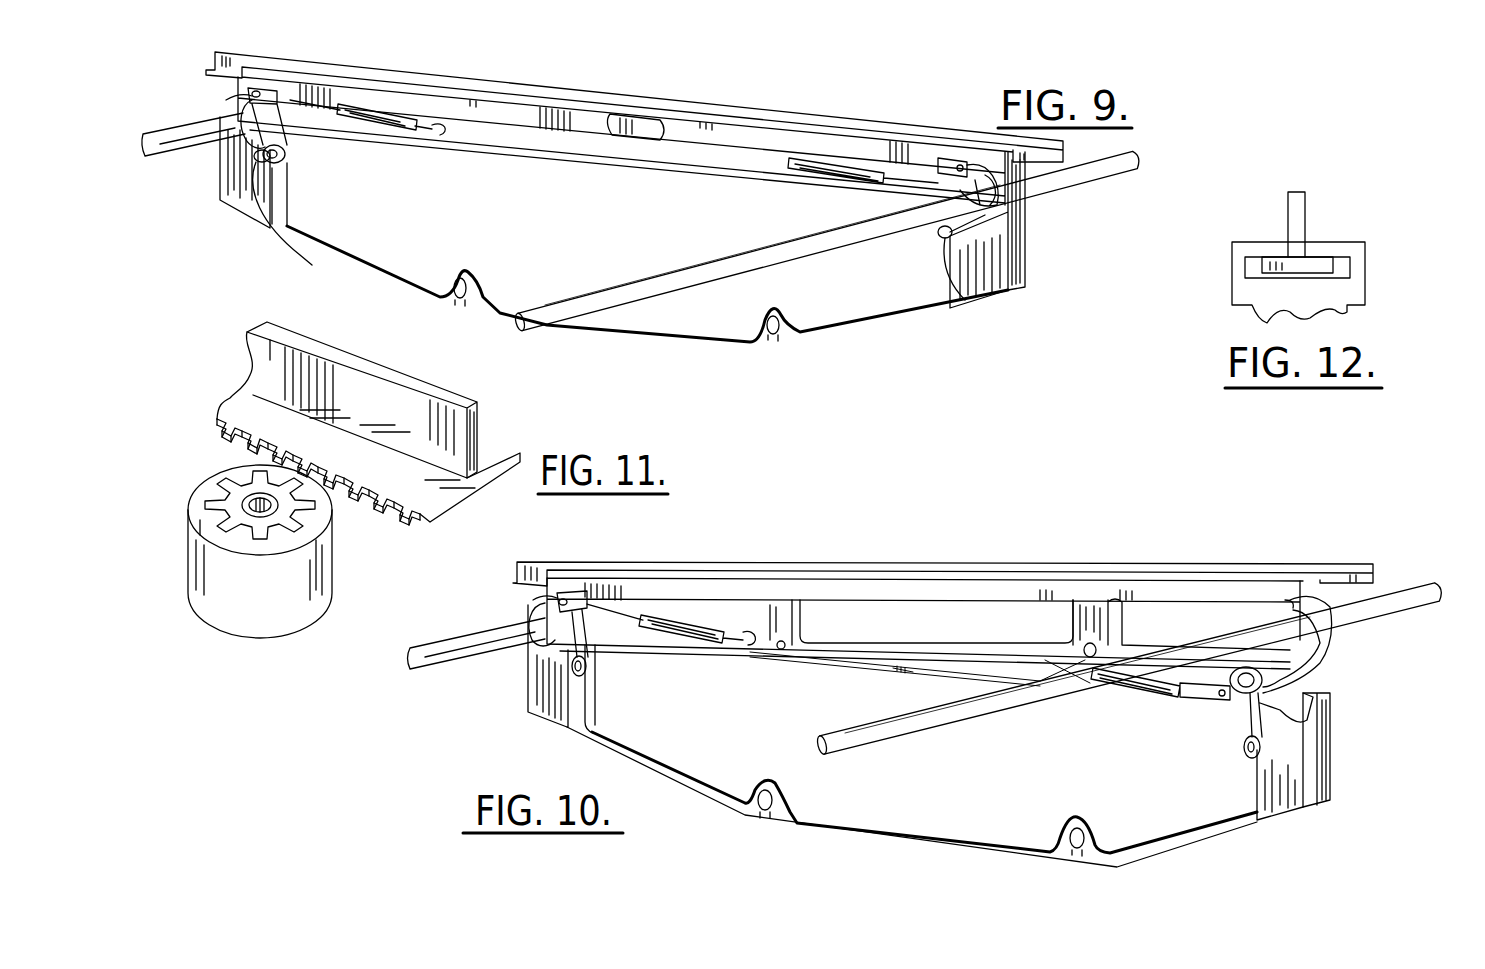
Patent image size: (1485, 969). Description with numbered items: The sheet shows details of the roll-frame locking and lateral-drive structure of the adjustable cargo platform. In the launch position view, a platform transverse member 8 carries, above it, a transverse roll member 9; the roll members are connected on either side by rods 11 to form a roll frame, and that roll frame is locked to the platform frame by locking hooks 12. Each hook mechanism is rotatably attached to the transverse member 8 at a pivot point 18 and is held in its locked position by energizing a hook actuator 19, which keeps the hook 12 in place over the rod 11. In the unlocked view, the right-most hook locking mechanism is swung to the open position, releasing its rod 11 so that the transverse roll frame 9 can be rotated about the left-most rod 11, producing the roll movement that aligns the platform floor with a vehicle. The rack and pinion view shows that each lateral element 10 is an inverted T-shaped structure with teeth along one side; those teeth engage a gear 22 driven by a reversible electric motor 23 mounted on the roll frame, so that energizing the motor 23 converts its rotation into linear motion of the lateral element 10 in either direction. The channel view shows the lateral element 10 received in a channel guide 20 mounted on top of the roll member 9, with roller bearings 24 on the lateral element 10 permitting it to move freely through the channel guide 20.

In FIG. 9, the transverse supporting member 8 is at (845, 315).
In FIG. 10, the transverse supporting member 8 is at (932, 823).
In FIG. 9, the transverse roll member 9 is at (558, 130).
In FIG. 12, the transverse roll member 9 is at (1250, 308).
In FIG. 10, the transverse roll member 9 is at (1012, 606).
In FIG. 9, the lateral element 10 is at (697, 105).
In FIG. 12, the lateral element 10 is at (1306, 200).
In FIG. 11, the lateral element 10 is at (473, 397).
In FIG. 10, the lateral element 10 is at (1232, 564).
In FIG. 9, the rod 11 is at (170, 146).
In FIG. 10, the rod 11 is at (450, 665).
In FIG. 9, the locking hook 12 is at (226, 100).
In FIG. 10, the locking hook 12 is at (535, 625).
In FIG. 9, the pivot point 18 is at (312, 262).
In FIG. 9, the hook actuator 19 is at (400, 125).
In FIG. 10, the hook actuator 19 is at (908, 652).
In FIG. 12, the channel guide 20 is at (1272, 250).
In FIG. 11, the gear 22 is at (190, 515).
In FIG. 11, the reversible electric motor 23 is at (333, 582).
In FIG. 12, the roller bearing 24 is at (1325, 265).